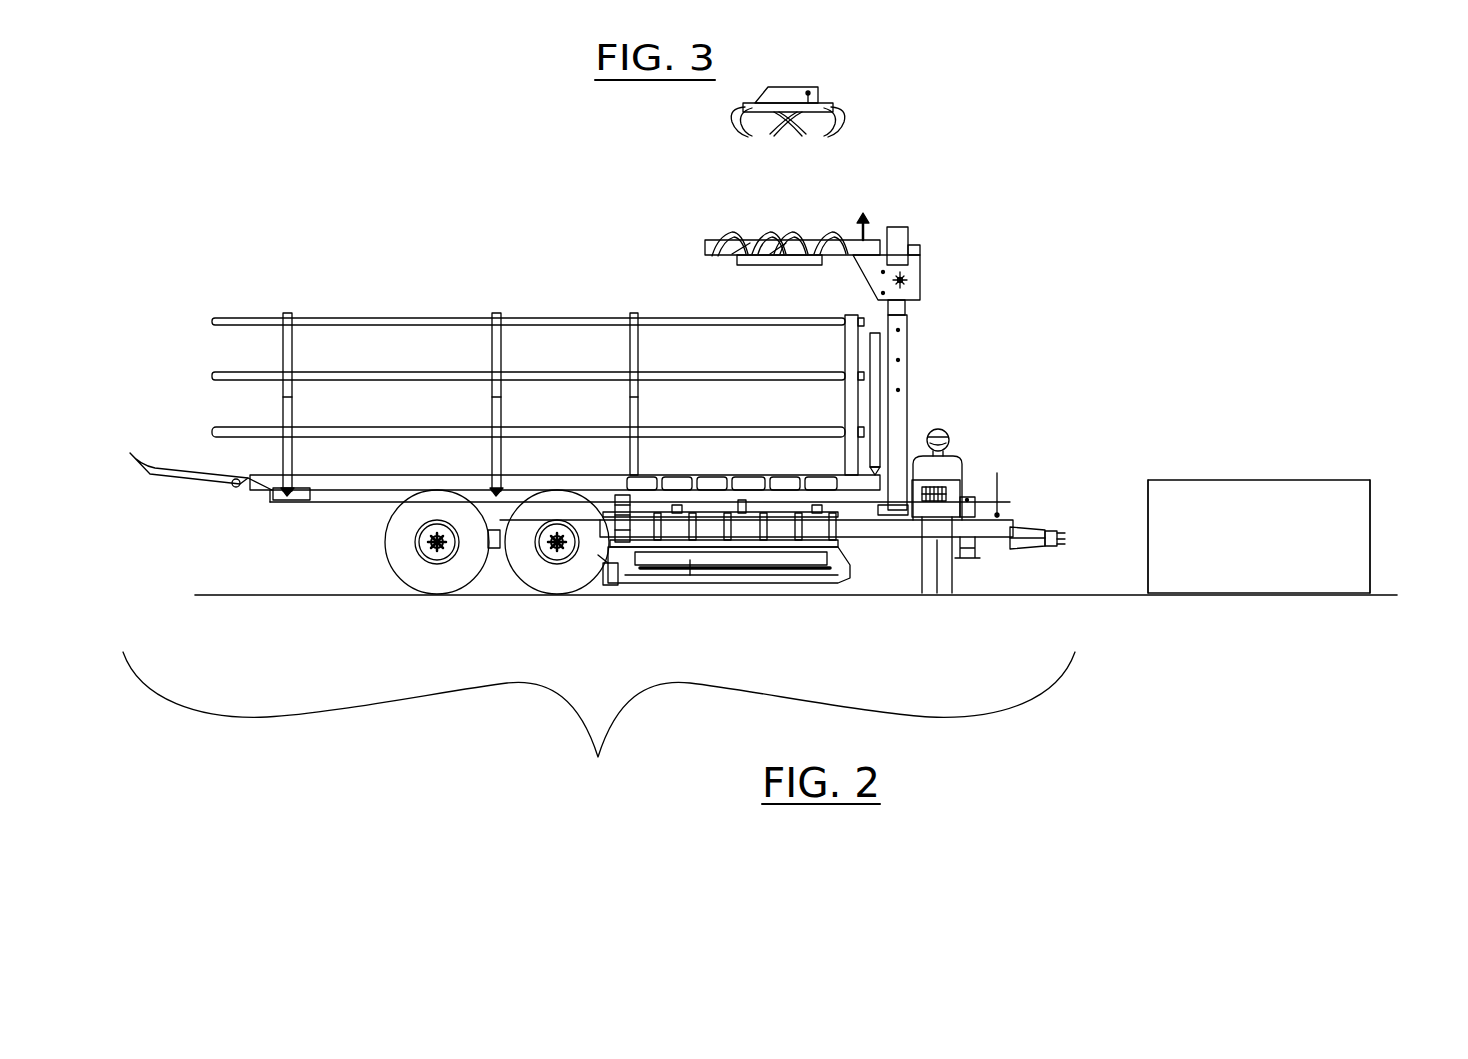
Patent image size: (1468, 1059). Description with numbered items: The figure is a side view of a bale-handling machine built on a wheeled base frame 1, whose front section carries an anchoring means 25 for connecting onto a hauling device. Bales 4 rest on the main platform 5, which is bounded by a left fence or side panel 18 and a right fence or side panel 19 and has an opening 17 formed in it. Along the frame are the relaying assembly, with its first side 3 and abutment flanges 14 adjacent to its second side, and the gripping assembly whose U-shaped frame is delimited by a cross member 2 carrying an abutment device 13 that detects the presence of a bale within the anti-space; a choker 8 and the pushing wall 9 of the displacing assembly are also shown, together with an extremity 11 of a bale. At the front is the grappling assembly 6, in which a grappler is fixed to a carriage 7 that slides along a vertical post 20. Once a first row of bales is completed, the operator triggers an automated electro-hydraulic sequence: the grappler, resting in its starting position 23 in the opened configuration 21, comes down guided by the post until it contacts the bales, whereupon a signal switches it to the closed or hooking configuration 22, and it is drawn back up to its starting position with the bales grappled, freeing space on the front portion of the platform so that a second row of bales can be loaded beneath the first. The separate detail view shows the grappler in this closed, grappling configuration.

In FIG. 2, the wheeled base frame 1 is at (601, 436).
In FIG. 2, the cross member 2 is at (825, 578).
In FIG. 2, the first side of the relaying assembly 3 is at (840, 547).
In FIG. 2, the bale 4 is at (1259, 562).
In FIG. 2, the main platform 5 is at (393, 488).
In FIG. 2, the grappling assembly 6 is at (805, 240).
In FIG. 2, the carriage of grappling assembly 7 is at (912, 222).
In FIG. 2, the choker 8 is at (658, 552).
In FIG. 2, the pushing wall of the displacing assembly 9 is at (893, 430).
In FIG. 2, the extremity of the bale 11 is at (1147, 497).
In FIG. 2, the abutment device of the cross-member 13 is at (568, 585).
In FIG. 2, the abutment flanges 14 is at (838, 525).
In FIG. 2, the opening in the main platform 17 is at (765, 488).
In FIG. 2, the left fence 18 is at (286, 313).
In FIG. 2, the right fence 19 is at (562, 316).
In FIG. 2, the vertical post of the grappling assembly 20 is at (905, 425).
In FIG. 2, the opened grappler 21 is at (727, 242).
In FIG. 3, the closed grappler 22 is at (838, 103).
In FIG. 2, the starting position of the grappling assembly 23 is at (864, 216).
In FIG. 2, the anchoring means 25 is at (1048, 528).